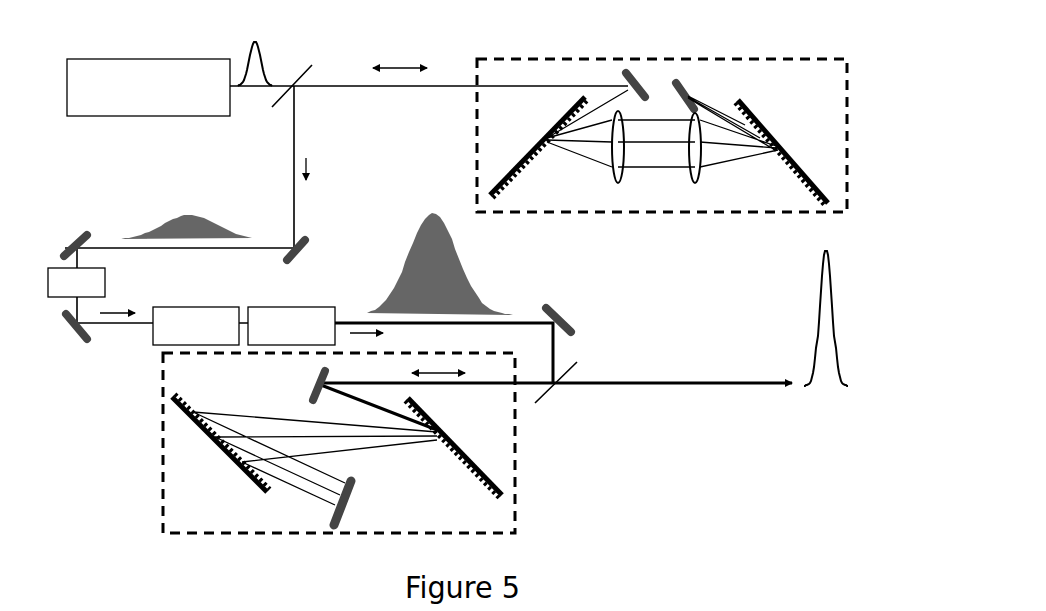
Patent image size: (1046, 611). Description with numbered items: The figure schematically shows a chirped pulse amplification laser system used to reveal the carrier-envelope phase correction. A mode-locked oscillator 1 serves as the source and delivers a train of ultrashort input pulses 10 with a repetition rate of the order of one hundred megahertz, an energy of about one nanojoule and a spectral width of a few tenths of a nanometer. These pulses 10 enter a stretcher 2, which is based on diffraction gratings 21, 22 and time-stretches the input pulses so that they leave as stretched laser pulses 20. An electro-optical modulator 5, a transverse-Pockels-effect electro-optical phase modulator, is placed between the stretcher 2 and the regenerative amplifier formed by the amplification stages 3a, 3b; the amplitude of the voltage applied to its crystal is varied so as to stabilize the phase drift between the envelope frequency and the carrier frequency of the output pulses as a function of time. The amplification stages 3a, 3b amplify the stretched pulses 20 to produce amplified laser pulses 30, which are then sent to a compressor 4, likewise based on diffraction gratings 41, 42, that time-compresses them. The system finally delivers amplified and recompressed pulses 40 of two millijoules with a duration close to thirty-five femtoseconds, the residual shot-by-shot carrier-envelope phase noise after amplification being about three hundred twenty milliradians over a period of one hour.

The mode-locked oscillator 1 is at (168, 116).
The ultrashort pulses 10 is at (251, 55).
The stretcher 2 is at (630, 158).
The diffraction grating 21 is at (492, 192).
The diffraction grating 22 is at (808, 185).
The stretched laser pulses 20 is at (178, 217).
The electro-optical modulator 5 is at (106, 285).
The amplification stage 3a is at (183, 307).
The amplification stage 3b is at (287, 307).
The amplified laser pulses 30 is at (480, 297).
The compressor 4 is at (352, 443).
The diffraction grating 41 is at (487, 475).
The diffraction grating 42 is at (176, 407).
The amplified and recompressed pulses 40 is at (820, 336).